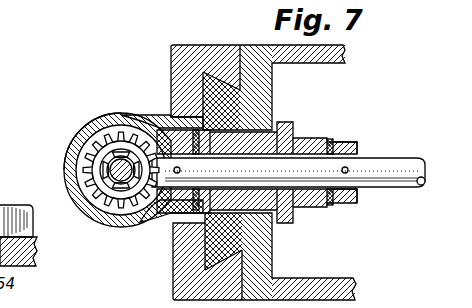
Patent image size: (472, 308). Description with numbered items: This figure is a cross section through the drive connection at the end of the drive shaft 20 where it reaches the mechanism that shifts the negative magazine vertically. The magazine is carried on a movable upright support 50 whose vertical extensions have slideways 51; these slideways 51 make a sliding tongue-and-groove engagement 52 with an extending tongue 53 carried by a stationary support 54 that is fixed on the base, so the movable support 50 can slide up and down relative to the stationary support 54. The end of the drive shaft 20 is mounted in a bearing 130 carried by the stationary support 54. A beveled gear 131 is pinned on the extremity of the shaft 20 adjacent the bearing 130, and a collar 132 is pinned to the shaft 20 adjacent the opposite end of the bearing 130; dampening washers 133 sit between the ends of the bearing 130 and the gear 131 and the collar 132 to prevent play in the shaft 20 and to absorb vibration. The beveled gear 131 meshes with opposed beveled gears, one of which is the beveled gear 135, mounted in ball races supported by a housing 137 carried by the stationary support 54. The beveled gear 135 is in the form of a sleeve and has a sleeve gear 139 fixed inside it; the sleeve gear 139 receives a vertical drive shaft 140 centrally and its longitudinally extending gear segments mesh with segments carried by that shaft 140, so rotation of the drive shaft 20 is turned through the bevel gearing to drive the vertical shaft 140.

The drive shaft 20 is at (385, 163).
The movable upright support 50 is at (61, 3).
The slideways 51 is at (178, 257).
The sliding tongue-and-groove engagement 52 is at (218, 82).
The extending tongue 53 is at (171, 100).
The stationary support 54 is at (260, 91).
The bearing 130 is at (309, 207).
The beveled gear 131 is at (147, 228).
The collar 132 is at (349, 205).
The dampening washers 133 is at (168, 122).
The beveled gear 135 is at (92, 226).
The housing 137 is at (65, 170).
The sleeve gear 139 is at (118, 117).
The vertical drive shaft 140 is at (76, 136).